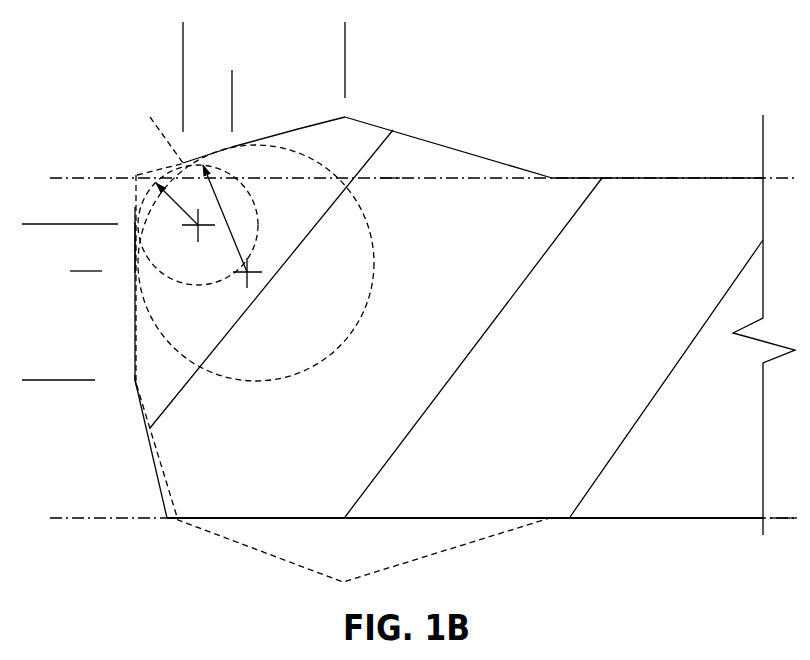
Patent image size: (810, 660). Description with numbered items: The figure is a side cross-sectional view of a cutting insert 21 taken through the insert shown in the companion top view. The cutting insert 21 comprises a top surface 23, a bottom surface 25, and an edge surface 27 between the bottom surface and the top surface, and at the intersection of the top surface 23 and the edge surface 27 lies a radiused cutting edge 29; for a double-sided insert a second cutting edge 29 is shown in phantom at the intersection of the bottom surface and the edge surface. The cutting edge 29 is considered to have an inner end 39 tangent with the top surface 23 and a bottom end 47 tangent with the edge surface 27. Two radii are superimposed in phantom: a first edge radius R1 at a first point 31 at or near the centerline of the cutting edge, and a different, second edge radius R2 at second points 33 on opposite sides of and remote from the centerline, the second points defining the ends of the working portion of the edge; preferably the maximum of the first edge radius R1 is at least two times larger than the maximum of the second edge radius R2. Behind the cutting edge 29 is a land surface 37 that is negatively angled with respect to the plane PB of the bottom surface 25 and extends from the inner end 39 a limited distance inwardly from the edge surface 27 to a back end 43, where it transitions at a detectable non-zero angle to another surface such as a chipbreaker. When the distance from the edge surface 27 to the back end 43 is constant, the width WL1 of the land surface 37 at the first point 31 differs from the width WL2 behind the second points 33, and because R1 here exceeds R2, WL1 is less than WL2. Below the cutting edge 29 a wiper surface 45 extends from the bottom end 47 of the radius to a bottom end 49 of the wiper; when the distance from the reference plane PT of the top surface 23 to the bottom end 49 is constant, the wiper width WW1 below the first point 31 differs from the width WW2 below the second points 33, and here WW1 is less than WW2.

The cutting insert 21 is at (604, 130).
The top surface 23 is at (508, 161).
The bottom surface 25 is at (212, 520).
The edge surface 27 is at (147, 442).
The cutting edge 29 is at (116, 160).
The first point 31 is at (153, 129).
The second points 33 is at (137, 175).
The land surface 37 is at (298, 129).
The inner end 39 is at (232, 147).
The back end 43 is at (345, 117).
The wiper surface 45 is at (133, 352).
The bottom end 47 is at (135, 273).
The bottom end of the wiper surface 49 is at (135, 380).
The first edge radius R1 is at (218, 210).
The second edge radius R2 is at (184, 212).
The width of the land surface at the first point WL1 is at (345, 85).
The width of the land surface behind the second points WL2 is at (345, 38).
The width of the wiper surface below the first point WW1 is at (87, 271).
The width of the wiper surface below the second points WW2 is at (38, 380).
The reference plane of the top surface PT is at (393, 180).
The plane of the bottom surface PB is at (778, 518).